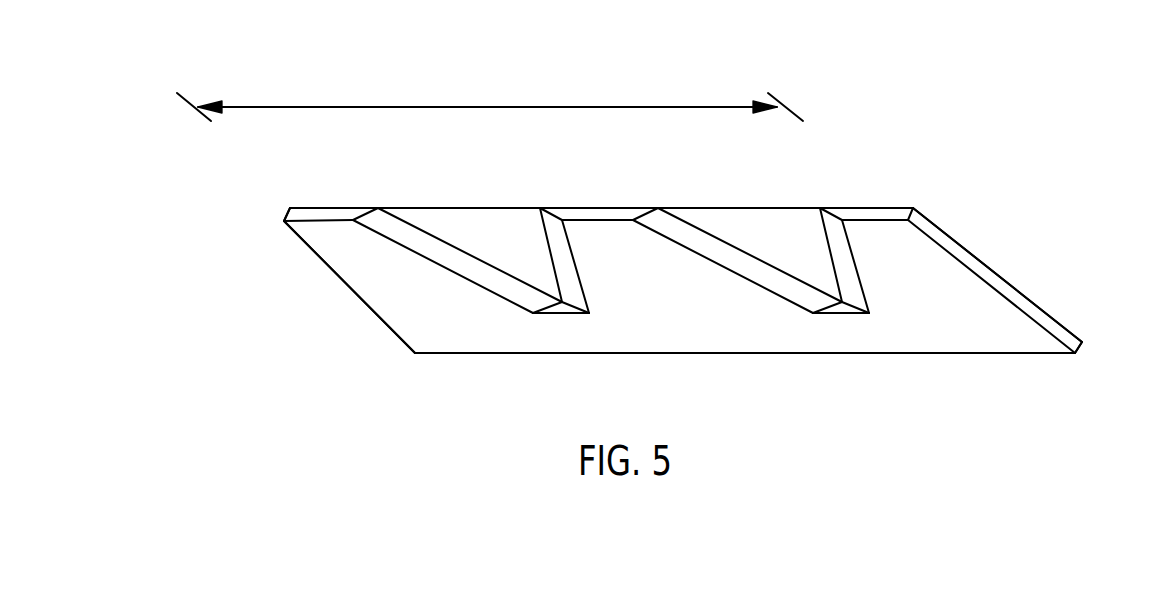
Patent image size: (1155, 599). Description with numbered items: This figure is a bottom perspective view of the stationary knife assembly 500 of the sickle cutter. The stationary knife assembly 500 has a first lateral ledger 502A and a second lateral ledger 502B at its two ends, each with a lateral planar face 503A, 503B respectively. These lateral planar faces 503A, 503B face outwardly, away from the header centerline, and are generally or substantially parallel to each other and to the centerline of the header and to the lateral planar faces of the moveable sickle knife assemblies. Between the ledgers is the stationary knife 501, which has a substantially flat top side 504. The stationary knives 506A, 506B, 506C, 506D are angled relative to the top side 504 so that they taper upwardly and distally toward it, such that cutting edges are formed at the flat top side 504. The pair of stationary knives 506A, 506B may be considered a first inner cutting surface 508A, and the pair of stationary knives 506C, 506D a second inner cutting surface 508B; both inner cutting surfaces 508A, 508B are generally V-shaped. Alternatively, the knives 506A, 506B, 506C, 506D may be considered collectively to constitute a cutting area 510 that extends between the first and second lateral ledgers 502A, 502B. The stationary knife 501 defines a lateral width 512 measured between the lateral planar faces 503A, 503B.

The stationary knife assembly 500 is at (727, 377).
The stationary knife 501 is at (755, 332).
The first lateral ledger 502A is at (361, 273).
The second lateral ledger 502B is at (977, 292).
The lateral planar face 503A is at (308, 251).
The lateral planar face 503B is at (946, 241).
The top side 504 is at (935, 206).
The stationary knife 506A is at (444, 247).
The stationary knife 506B is at (553, 244).
The stationary knife 506C is at (724, 247).
The stationary knife 506D is at (833, 244).
The inner cutting surface 508A is at (471, 235).
The inner cutting surface 508B is at (751, 235).
The cutting area 510 is at (817, 182).
The lateral width 512 is at (415, 107).